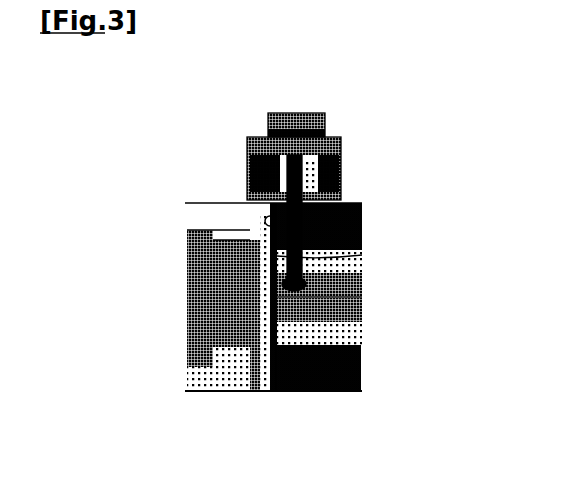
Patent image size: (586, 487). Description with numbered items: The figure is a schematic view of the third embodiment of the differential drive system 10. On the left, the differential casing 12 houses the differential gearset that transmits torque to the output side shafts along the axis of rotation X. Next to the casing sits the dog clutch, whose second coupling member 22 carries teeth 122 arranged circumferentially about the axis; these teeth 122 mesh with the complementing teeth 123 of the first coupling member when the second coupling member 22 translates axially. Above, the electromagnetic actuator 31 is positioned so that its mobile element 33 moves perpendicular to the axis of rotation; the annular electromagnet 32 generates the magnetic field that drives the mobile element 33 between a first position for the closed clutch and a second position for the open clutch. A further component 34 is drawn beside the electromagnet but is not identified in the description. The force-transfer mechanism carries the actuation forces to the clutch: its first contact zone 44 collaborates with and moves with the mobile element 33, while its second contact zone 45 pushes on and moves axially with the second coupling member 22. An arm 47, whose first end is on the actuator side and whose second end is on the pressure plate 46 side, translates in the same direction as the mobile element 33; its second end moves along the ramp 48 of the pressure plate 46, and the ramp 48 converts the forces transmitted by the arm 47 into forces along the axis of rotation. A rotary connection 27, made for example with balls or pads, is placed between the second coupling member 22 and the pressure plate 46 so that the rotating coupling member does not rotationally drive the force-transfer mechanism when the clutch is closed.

The differential drive system 10 is at (136, 187).
The differential casing 12 is at (213, 217).
The teeth 122 is at (217, 213).
The complementing teeth 123 is at (210, 228).
The second coupling member 22 is at (232, 222).
The rotary connection 27 is at (266, 217).
The electromagnetic actuator 31 is at (355, 140).
The annular electromagnet 32 is at (343, 159).
The mobile element 33 is at (310, 113).
The upper block 34 is at (363, 213).
The first contact zone 44 is at (280, 187).
The second contact zone 45 is at (362, 232).
The pressure plate 46 is at (289, 345).
The arm 47 is at (333, 258).
The ramp 48 is at (331, 300).